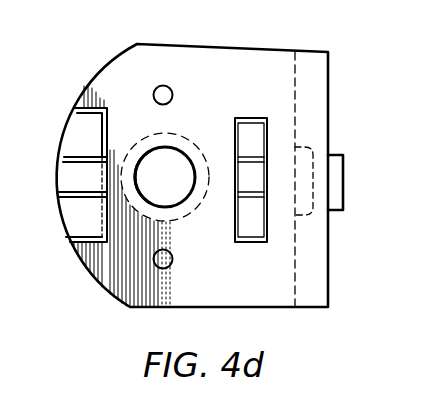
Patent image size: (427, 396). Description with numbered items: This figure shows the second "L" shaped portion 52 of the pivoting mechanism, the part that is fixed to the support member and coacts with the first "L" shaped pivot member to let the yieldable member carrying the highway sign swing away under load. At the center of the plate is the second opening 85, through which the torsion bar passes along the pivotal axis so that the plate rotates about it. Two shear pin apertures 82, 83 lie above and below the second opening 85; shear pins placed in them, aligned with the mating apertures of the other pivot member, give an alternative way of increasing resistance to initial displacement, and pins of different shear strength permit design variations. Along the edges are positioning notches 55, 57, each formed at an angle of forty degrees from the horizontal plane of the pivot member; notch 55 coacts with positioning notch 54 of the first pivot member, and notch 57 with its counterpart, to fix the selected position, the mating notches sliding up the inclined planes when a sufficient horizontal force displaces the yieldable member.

The second "L" shaped portion 52 is at (97, 75).
The positioning notch 54 is at (53, 137).
The positioning notch 55 is at (255, 178).
The positioning notch 57 is at (72, 172).
The shear pin aperture 82 is at (170, 86).
The shear pin aperture 83 is at (170, 266).
The second opening 85 is at (187, 154).